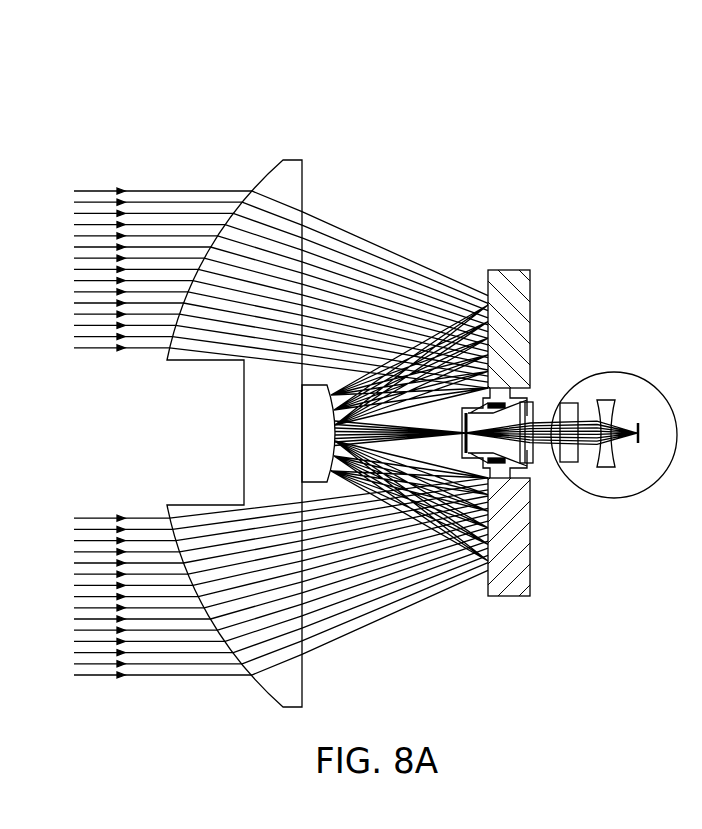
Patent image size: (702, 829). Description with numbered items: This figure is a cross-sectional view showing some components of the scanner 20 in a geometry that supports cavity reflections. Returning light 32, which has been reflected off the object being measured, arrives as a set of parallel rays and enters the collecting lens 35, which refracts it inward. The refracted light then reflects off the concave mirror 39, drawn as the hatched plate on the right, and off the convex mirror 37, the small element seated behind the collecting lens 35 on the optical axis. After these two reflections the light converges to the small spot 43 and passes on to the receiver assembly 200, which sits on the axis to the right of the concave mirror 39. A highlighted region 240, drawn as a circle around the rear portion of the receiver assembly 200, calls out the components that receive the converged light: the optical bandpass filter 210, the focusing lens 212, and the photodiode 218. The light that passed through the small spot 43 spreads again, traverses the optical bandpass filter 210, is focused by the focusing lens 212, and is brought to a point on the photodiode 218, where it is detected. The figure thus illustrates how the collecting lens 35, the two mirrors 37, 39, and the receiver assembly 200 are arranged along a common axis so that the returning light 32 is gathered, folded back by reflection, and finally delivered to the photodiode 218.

The scanner 20 is at (213, 98).
The returning light 32 is at (170, 177).
The collecting lens 35 is at (293, 158).
The convex mirror 37 is at (338, 392).
The concave mirror 39 is at (488, 297).
The small spot 43 is at (433, 520).
The receiver assembly 200 is at (580, 290).
The optical bandpass filter 210 is at (568, 466).
The focusing lens 212 is at (603, 468).
The photodiode 218 is at (638, 445).
The highlighted region 240 is at (650, 383).